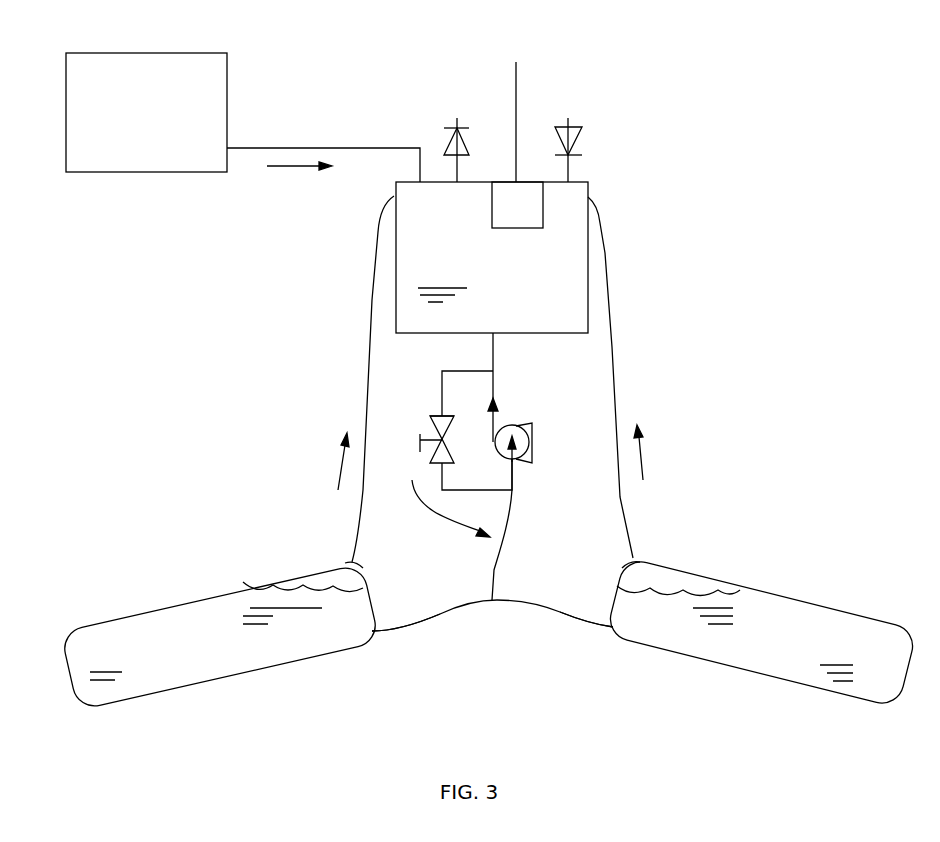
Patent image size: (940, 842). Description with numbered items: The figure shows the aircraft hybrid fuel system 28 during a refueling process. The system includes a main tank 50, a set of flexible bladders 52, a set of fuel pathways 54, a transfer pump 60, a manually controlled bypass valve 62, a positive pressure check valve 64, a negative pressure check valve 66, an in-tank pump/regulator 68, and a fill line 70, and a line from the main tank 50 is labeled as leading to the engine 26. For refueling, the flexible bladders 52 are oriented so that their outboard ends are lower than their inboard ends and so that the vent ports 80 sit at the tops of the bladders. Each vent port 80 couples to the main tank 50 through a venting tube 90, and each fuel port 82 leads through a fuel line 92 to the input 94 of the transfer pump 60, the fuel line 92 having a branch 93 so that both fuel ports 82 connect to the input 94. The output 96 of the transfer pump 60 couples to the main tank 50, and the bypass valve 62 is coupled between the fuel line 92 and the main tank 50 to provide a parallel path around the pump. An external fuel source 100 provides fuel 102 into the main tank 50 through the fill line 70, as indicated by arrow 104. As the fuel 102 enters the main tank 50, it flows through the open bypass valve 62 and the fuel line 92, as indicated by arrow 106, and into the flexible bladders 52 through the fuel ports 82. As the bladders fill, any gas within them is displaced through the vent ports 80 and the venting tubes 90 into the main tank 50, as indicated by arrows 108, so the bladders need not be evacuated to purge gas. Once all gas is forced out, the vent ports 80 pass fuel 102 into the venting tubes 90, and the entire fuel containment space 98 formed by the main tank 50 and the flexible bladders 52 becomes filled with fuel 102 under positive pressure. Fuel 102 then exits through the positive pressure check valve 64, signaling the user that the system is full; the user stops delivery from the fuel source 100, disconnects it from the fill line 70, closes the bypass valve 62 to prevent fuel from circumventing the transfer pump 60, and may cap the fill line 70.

The hybrid fuel system 28 is at (822, 53).
The external fuel source 100 is at (190, 122).
The fuel 102 is at (222, 144).
The fill line 70 is at (308, 148).
The arrow 104 is at (302, 168).
The engine 26 is at (567, 54).
The positive pressure check valve 64 is at (440, 108).
The negative pressure check valve 66 is at (590, 108).
The main tank 50 is at (505, 266).
The in-tank pump/regulator 68 is at (528, 216).
The venting tubes 90 is at (678, 308).
The fuel pathways 54 is at (637, 293).
The fuel containment space 98 is at (822, 248).
The flexible bladders 52 is at (847, 432).
The vent ports 80 is at (733, 478).
The arrows 108 is at (340, 470).
The transfer pump 60 is at (558, 387).
The bypass valve 62 is at (424, 403).
The output 96 is at (505, 421).
The input 94 is at (514, 490).
The fuel line 92 is at (493, 570).
The arrow 106 is at (432, 507).
The branch 93 is at (503, 618).
The fuel ports 82 is at (630, 673).